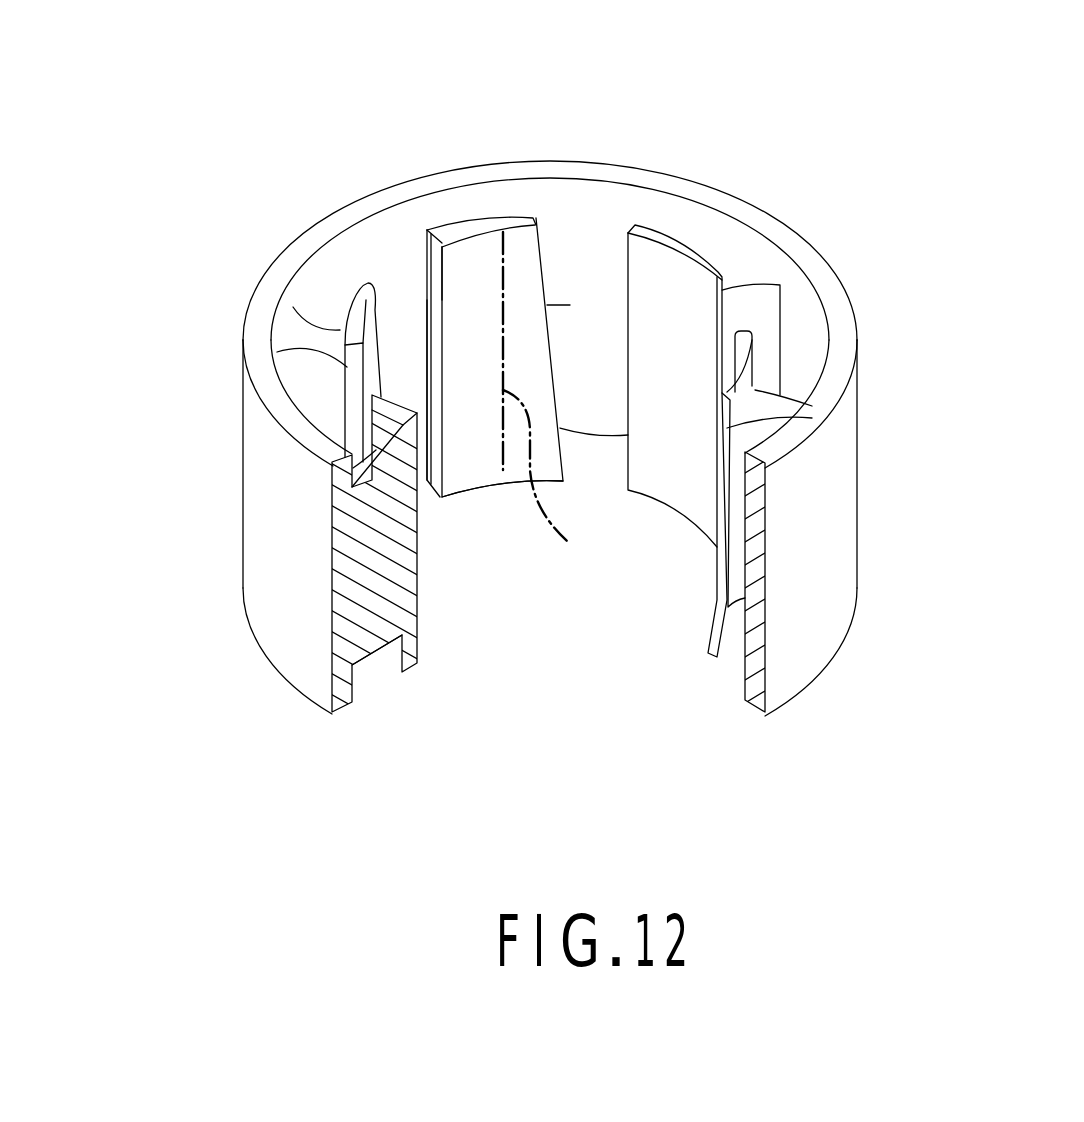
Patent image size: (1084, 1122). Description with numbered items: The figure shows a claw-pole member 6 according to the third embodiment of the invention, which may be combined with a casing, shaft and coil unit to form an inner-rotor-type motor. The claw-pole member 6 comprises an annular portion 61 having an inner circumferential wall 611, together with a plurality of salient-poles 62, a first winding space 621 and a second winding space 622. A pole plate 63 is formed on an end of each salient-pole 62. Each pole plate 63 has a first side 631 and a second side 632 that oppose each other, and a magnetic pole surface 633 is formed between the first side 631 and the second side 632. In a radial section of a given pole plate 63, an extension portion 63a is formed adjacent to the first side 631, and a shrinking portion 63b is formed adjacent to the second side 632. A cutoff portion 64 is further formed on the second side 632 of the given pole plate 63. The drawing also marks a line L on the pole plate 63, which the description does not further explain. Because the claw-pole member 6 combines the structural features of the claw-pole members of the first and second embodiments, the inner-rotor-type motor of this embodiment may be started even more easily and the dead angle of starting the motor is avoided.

The claw-pole member 6 is at (737, 188).
The annular portion 61 is at (777, 240).
The inner circumferential wall 611 is at (803, 308).
The salient-pole 62 is at (462, 220).
The first winding space 621 is at (305, 385).
The second winding space 622 is at (320, 305).
The pole plate 63 is at (483, 227).
The extension portion 63a is at (428, 277).
The shrinking portion 63b is at (530, 213).
The first side 631 is at (432, 283).
The second side 632 is at (547, 280).
The magnetic pole surface 633 is at (482, 468).
The cutoff portion 64 is at (547, 304).
The axis line L is at (551, 475).